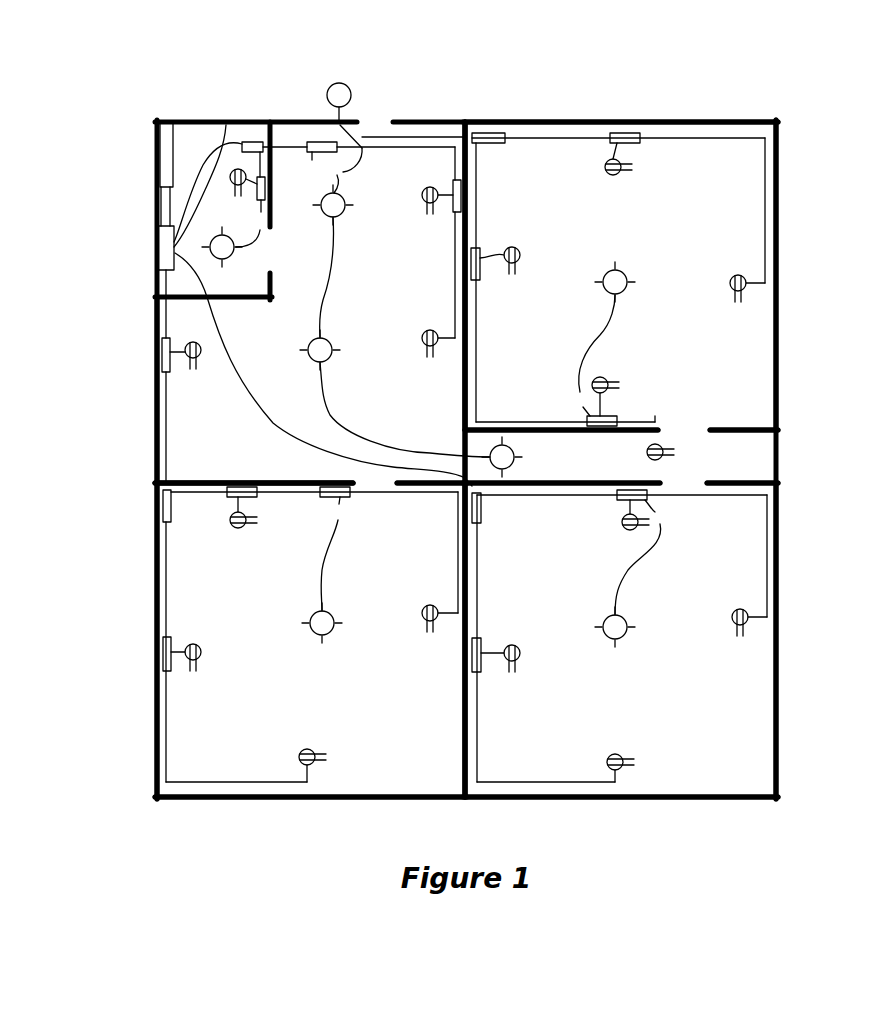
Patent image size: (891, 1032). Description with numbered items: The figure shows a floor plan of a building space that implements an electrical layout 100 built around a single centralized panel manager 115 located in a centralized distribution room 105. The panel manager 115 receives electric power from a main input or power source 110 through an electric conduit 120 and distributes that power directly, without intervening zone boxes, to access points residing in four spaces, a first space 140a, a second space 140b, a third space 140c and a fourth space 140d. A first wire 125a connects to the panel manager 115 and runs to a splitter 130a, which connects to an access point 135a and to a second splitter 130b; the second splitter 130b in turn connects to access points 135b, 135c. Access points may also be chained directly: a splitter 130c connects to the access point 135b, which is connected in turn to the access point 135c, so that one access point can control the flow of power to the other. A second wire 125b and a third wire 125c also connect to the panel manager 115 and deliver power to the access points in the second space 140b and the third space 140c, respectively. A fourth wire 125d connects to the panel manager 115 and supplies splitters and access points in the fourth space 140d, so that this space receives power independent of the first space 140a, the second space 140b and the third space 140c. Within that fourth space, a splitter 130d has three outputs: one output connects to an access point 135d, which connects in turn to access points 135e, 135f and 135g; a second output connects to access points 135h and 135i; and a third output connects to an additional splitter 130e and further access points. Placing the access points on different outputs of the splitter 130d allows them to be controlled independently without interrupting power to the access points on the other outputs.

The electrical layout 100 is at (98, 115).
The centralized distribution room 105 is at (184, 136).
The main input 110 is at (160, 165).
The centralized panel manager 115 is at (158, 248).
The electric conduit 120 is at (160, 208).
The first wire 125a is at (164, 322).
The second wire 125b is at (270, 423).
The third wire 125c is at (220, 138).
The fourth wire 125d is at (217, 157).
The splitter 130a is at (162, 355).
The second splitter 130b is at (163, 497).
The splitter 130c is at (348, 497).
The splitter 130d is at (318, 142).
The additional splitter 130e is at (462, 197).
The access point 135a is at (190, 371).
The access point 135b is at (333, 508).
The access point 135c is at (310, 632).
The access point 135d is at (303, 184).
The access point 135e is at (345, 198).
The access point 135f is at (333, 342).
The access point 135g is at (516, 460).
The access point 135h is at (349, 160).
The access point 135i is at (350, 90).
The first space 140a is at (407, 768).
The second space 140b is at (742, 711).
The third space 140c is at (730, 360).
The fourth space 140d is at (180, 433).